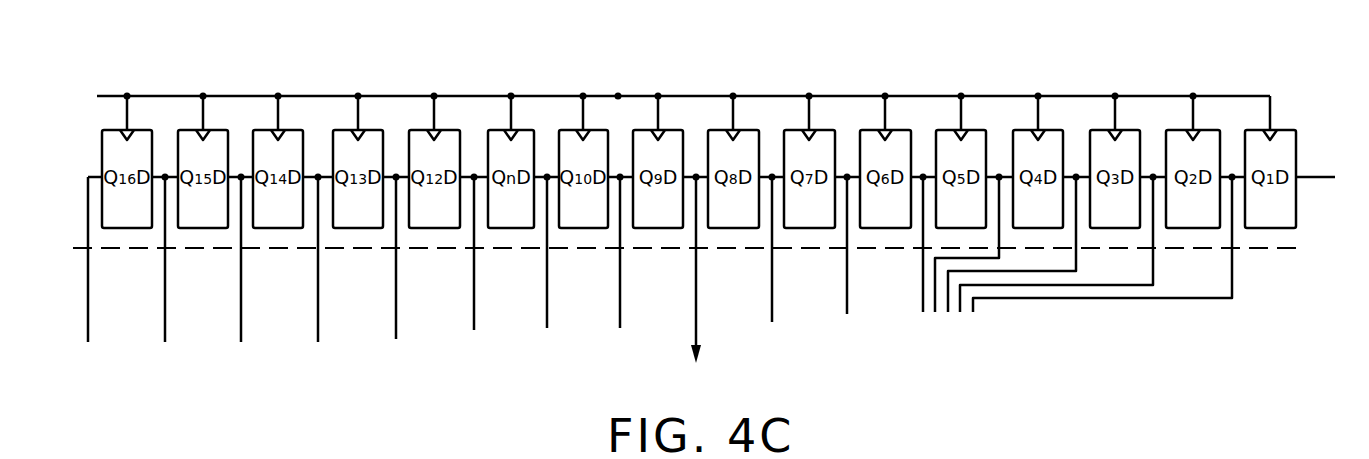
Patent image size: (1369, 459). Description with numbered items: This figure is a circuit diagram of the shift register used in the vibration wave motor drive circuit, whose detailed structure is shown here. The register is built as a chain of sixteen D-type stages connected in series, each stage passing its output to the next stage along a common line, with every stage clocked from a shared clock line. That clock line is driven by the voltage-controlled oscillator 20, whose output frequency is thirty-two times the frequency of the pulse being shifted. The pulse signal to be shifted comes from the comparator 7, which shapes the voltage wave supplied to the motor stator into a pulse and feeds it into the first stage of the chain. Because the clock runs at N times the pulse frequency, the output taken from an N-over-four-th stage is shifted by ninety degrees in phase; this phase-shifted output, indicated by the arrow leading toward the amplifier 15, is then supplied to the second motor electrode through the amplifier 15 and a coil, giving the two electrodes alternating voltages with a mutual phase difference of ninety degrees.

The voltage-controlled oscillator 20 is at (618, 96).
The amplifier 15 is at (695, 286).
The comparator 7 is at (1325, 177).